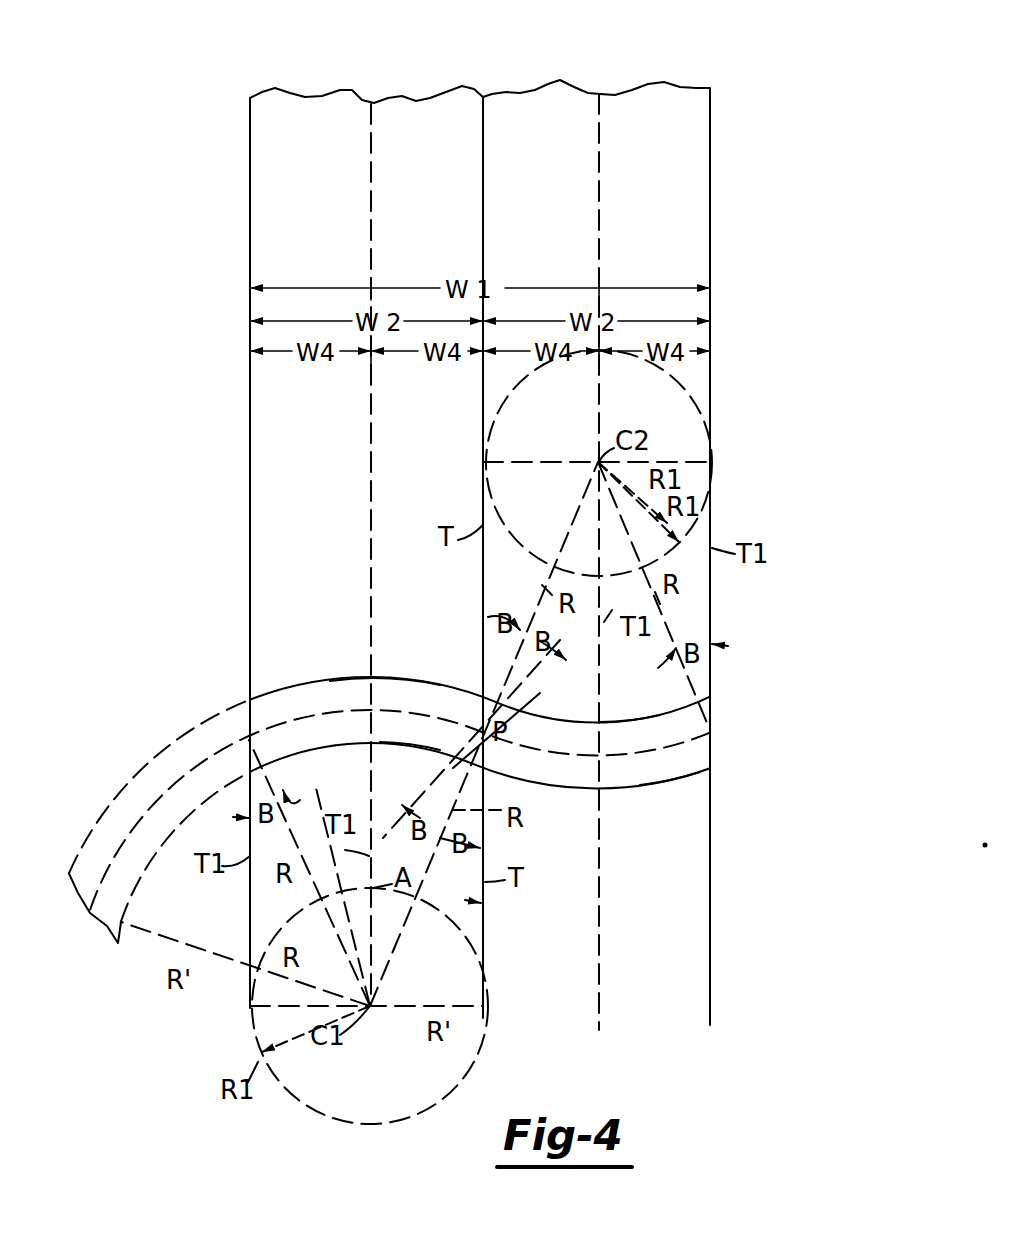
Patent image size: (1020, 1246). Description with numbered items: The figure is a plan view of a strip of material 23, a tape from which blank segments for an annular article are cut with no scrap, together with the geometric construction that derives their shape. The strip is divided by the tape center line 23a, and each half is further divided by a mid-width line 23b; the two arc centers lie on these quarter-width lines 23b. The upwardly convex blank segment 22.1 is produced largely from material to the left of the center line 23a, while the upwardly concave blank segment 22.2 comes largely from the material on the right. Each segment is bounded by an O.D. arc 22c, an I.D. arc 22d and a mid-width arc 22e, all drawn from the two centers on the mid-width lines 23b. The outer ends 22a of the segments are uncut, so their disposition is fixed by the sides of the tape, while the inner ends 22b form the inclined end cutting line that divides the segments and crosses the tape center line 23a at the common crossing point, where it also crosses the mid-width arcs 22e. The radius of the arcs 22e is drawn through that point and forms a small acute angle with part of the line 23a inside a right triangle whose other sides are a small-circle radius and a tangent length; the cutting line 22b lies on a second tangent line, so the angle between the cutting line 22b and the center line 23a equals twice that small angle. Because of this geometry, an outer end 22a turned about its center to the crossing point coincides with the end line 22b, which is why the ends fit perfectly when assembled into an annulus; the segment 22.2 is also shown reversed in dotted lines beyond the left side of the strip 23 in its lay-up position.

The strip of material 23 is at (250, 140).
The tape center line 23a is at (483, 97).
The mid-width lines 23b is at (374, 140).
The outer ends 22a is at (253, 707).
The inner ends 22b is at (80, 897).
The O.D. arc 22c is at (398, 677).
The I.D. arc 22d is at (632, 722).
The mid-width arc 22e is at (293, 718).
The blank segment 22.1 is at (334, 731).
The blank segment 22.2 is at (343, 770).